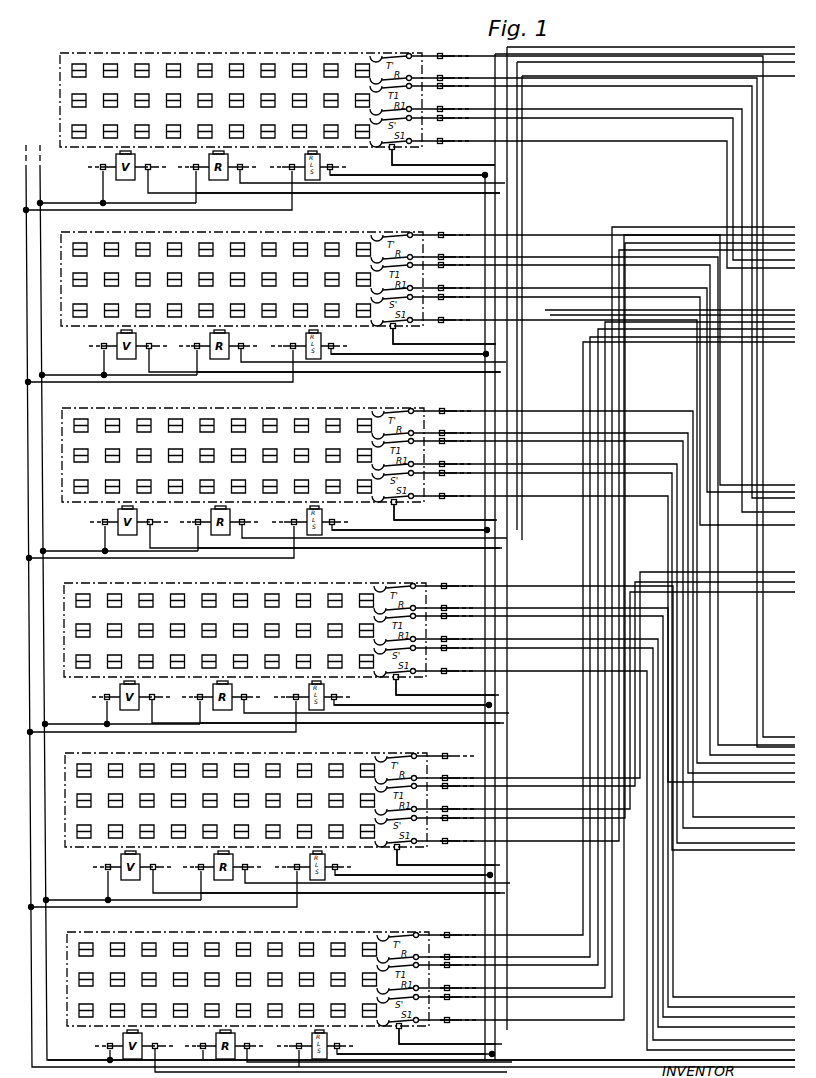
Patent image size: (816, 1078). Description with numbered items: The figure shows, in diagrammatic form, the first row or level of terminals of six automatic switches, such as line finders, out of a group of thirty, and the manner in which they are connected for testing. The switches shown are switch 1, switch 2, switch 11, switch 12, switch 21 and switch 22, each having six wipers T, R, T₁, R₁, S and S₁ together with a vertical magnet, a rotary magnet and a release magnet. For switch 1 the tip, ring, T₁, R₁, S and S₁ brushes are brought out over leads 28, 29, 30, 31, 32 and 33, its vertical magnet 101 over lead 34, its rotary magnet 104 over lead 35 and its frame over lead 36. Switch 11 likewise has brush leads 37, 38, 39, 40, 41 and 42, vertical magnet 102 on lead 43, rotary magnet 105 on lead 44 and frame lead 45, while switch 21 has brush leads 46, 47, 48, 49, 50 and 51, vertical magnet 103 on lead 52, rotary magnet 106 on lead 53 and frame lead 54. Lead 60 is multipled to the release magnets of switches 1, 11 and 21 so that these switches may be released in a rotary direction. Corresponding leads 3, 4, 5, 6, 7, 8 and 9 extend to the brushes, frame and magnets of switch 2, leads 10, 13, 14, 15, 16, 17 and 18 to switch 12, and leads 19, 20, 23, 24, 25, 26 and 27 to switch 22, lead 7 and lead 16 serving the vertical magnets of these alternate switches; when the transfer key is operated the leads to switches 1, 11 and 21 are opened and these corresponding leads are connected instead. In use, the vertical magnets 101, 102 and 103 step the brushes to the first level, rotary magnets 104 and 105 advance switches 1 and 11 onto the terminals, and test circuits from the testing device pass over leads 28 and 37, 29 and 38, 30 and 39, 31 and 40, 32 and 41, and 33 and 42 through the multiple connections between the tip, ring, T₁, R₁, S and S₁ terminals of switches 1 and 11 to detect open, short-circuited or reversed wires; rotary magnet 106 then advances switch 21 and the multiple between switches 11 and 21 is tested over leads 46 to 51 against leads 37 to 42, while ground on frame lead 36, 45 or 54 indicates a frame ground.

The switch 1 is at (236, 927).
The switch 2 is at (236, 748).
The wire 3 is at (513, 786).
The wire 4 is at (544, 809).
The wire 5 is at (513, 818).
The wire 6 is at (544, 841).
The lead 7 is at (509, 883).
The wire 8 is at (538, 864).
The wire 9 is at (560, 875).
The wire 10 is at (494, 411).
The switch 11 is at (242, 578).
The switch 12 is at (238, 403).
The wire 13 is at (522, 464).
The wire 14 is at (504, 473).
The wire 15 is at (497, 497).
The lead 16 is at (523, 520).
The wire 17 is at (351, 536).
The wire 18 is at (521, 530).
The wire 19 is at (545, 78).
The wire 20 is at (580, 78).
The switch 21 is at (242, 227).
The switch 22 is at (236, 48).
The wire 23 is at (576, 112).
The wire 24 is at (608, 112).
The wire 25 is at (398, 194).
The wire 26 is at (432, 184).
The wire 27 is at (466, 176).
The lead 28 is at (519, 935).
The lead 29 is at (566, 957).
The lead 30 is at (519, 965).
The lead 31 is at (566, 988).
The lead 32 is at (519, 997).
The lead 33 is at (566, 1020).
The lead 34 is at (506, 1059).
The lead 35 is at (545, 1038).
The lead 36 is at (572, 1053).
The lead 37 is at (505, 586).
The lead 38 is at (534, 608).
The lead 39 is at (505, 616).
The lead 40 is at (534, 639).
The lead 41 is at (505, 648).
The lead 42 is at (534, 671).
The lead 43 is at (502, 712).
The lead 44 is at (530, 695).
The lead 45 is at (560, 705).
The lead 46 is at (577, 228).
The lead 47 is at (611, 228).
The lead 48 is at (640, 228).
The lead 49 is at (578, 285).
The lead 50 is at (613, 285).
The lead 51 is at (642, 285).
The lead 52 is at (382, 372).
The lead 53 is at (420, 363).
The lead 54 is at (458, 355).
The lead 60 is at (694, 1060).
The vertical magnet 101 is at (143, 1040).
The vertical magnet 102 is at (140, 691).
The vertical magnet 103 is at (137, 340).
The rotary magnet 104 is at (236, 1040).
The rotary magnet 105 is at (233, 691).
The rotary magnet 106 is at (230, 340).